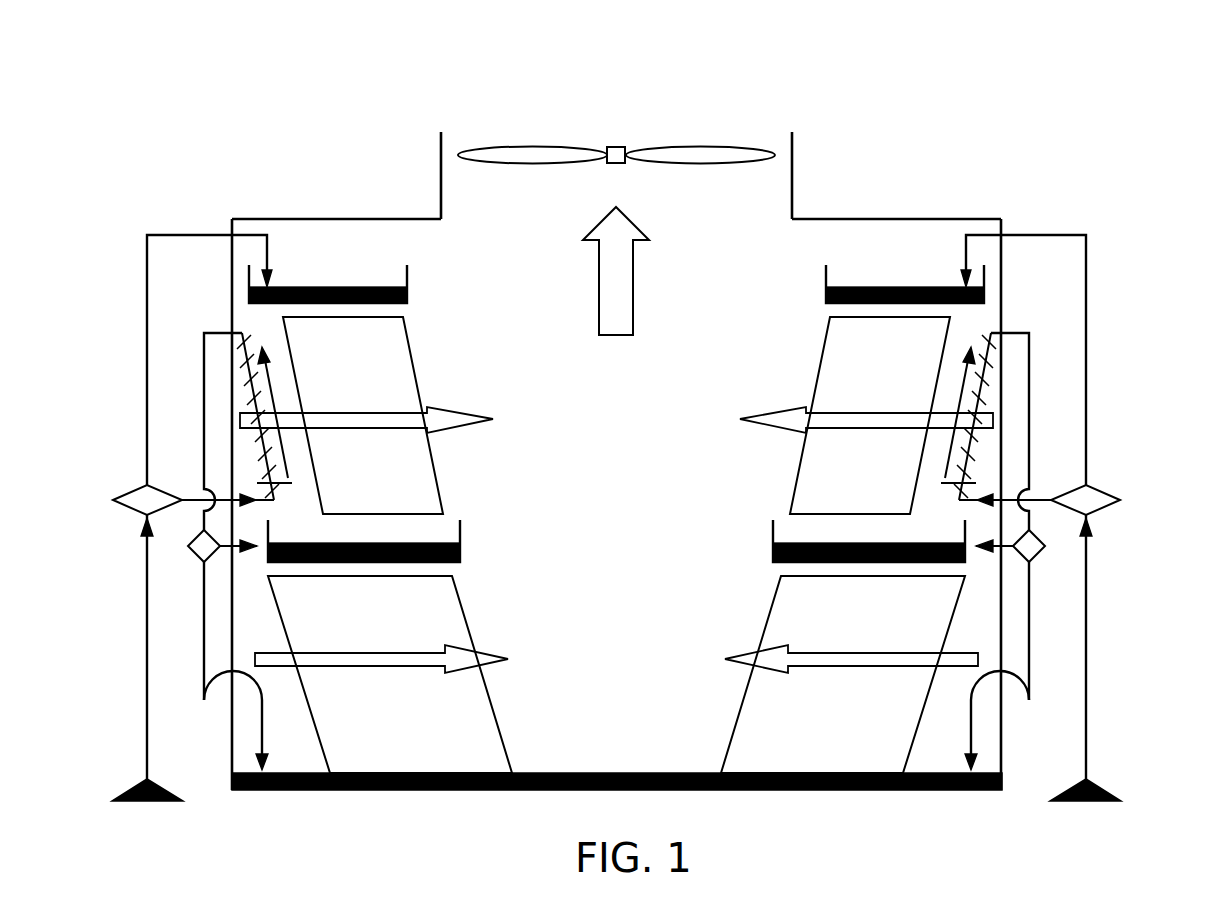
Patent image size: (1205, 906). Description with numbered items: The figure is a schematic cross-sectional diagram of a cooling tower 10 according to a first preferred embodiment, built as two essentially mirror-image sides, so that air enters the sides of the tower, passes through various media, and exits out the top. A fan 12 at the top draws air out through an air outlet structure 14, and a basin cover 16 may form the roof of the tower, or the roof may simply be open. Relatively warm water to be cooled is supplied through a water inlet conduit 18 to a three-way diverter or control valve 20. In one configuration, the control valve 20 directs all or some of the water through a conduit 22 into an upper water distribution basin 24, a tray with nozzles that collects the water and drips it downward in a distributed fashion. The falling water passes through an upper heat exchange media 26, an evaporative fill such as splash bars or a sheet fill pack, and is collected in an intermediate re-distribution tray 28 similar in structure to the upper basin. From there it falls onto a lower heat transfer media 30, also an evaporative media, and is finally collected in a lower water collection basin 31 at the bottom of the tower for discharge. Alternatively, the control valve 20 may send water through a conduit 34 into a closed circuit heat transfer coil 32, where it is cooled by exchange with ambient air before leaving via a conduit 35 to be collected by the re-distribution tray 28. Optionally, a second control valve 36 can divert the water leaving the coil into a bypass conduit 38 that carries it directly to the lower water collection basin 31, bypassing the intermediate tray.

The cooling tower 10 is at (427, 73).
The fan 12 is at (614, 128).
The air outlet structure 14 is at (441, 150).
The basin cover 16 is at (310, 218).
The water inlet conduit 18 is at (133, 788).
The control valve 20 is at (135, 508).
The conduit 22 is at (147, 393).
The upper water distribution basin 24 is at (409, 268).
The upper heat exchange media 26 is at (334, 366).
The re-distribution tray 28 is at (462, 532).
The lower heat transfer media 30 is at (358, 618).
The lower water collection basin 31 is at (960, 791).
The closed circuit heat transfer coil 32 is at (258, 457).
The conduit 34 is at (192, 496).
The conduit 35 is at (204, 353).
The second control valve 36 is at (197, 553).
The bypass conduit 38 is at (262, 712).